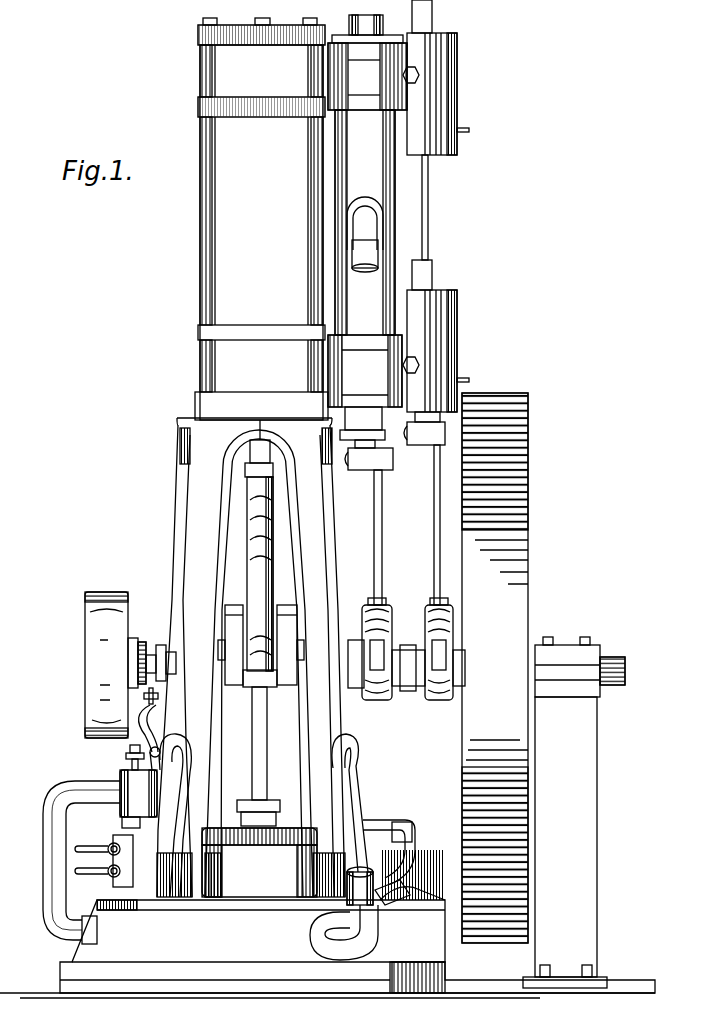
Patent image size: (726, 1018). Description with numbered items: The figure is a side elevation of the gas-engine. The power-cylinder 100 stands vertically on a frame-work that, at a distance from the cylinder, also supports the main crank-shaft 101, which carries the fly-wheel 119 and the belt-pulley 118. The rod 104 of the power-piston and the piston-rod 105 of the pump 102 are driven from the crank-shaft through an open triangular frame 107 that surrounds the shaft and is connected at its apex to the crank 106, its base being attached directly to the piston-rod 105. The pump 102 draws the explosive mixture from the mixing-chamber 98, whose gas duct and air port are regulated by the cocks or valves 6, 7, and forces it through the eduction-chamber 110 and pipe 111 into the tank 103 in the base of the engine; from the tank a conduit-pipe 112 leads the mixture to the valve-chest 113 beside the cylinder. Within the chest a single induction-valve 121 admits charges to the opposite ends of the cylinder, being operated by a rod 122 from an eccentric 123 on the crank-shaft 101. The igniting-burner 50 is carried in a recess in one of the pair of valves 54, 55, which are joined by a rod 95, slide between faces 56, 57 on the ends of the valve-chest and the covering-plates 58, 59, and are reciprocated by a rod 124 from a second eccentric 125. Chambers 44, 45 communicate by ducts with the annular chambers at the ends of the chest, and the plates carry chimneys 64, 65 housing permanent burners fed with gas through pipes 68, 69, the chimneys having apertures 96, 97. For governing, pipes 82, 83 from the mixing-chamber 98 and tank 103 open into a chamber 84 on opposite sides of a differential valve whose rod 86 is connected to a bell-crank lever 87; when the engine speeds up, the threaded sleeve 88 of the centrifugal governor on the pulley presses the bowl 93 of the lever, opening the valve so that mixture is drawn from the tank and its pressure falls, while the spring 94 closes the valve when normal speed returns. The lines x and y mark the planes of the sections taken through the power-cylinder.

The cock or valve 6 is at (88, 846).
The cock or valve 7 is at (86, 872).
The chamber 44 is at (411, 67).
The chamber 45 is at (412, 374).
The igniting-burner 50 is at (262, 36).
The igniting-valve 54 is at (432, 77).
The igniting-valve 55 is at (422, 275).
The face 56 is at (416, 142).
The face 57 is at (450, 362).
The covering-plate 58 is at (450, 55).
The covering-plate 59 is at (446, 292).
The chimney 64 is at (456, 77).
The chimney 65 is at (456, 296).
The gas pipe 68 is at (465, 130).
The gas pipe 69 is at (468, 380).
The pipe 82 is at (165, 800).
The pipe 83 is at (45, 843).
The chamber 84 is at (138, 799).
The valve rod 86 is at (128, 760).
The bell-crank lever 87 is at (142, 740).
The threaded sleeve 88 is at (139, 640).
The bowl 93 is at (156, 700).
The spring 94 is at (158, 724).
The rod 95 is at (428, 195).
The aperture 96 is at (456, 103).
The aperture 97 is at (456, 345).
The mixing-chamber 98 is at (140, 843).
The power-cylinder 100 is at (261, 219).
The main crank-shaft 101 is at (612, 652).
The pump 102 is at (259, 862).
The tank 103 is at (357, 946).
The power-piston rod 104 is at (250, 457).
The pump piston-rod 105 is at (268, 752).
The crank 106 is at (236, 632).
The open triangular frame 107 is at (258, 574).
The eduction-chamber 110 is at (396, 820).
The pipe 111 is at (396, 892).
The conduit-pipe 112 is at (365, 234).
The valve-chest 113 is at (367, 241).
The belt-pulley 118 is at (106, 665).
The fly-wheel 119 is at (438, 668).
The induction-valve 121 is at (366, 20).
The rod 122 is at (382, 556).
The eccentric 123 is at (388, 618).
The rod 124 is at (434, 532).
The eccentric 125 is at (452, 624).
The section line x is at (285, 455).
The section line y is at (207, 220).